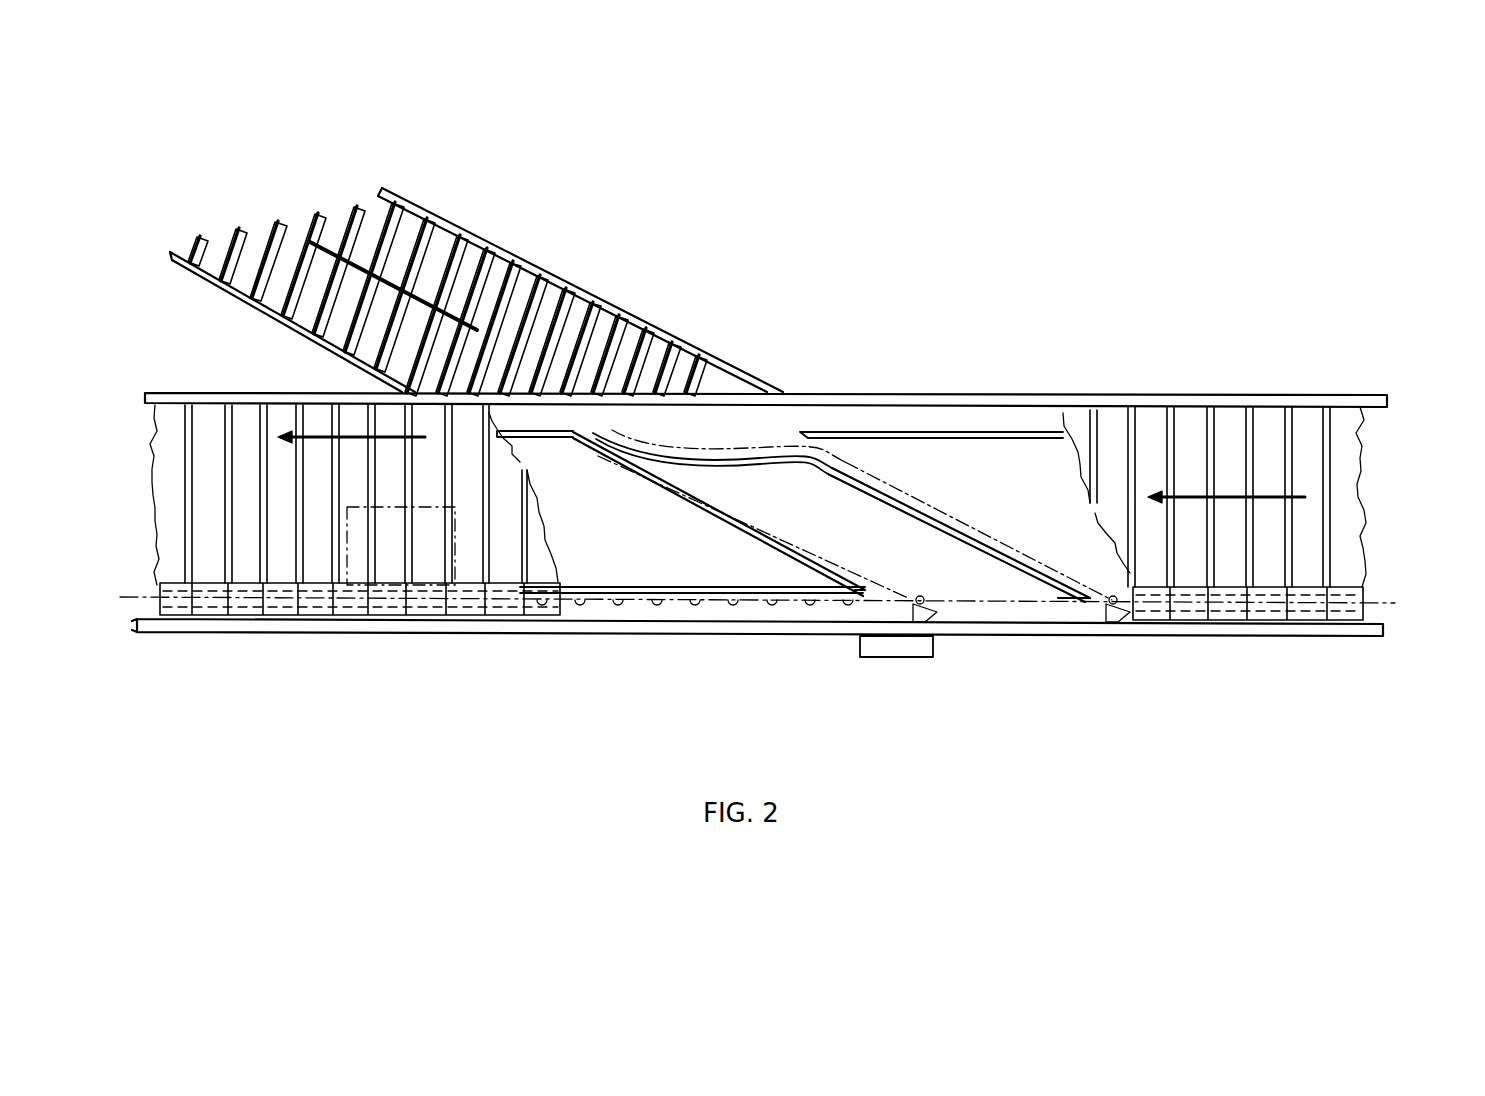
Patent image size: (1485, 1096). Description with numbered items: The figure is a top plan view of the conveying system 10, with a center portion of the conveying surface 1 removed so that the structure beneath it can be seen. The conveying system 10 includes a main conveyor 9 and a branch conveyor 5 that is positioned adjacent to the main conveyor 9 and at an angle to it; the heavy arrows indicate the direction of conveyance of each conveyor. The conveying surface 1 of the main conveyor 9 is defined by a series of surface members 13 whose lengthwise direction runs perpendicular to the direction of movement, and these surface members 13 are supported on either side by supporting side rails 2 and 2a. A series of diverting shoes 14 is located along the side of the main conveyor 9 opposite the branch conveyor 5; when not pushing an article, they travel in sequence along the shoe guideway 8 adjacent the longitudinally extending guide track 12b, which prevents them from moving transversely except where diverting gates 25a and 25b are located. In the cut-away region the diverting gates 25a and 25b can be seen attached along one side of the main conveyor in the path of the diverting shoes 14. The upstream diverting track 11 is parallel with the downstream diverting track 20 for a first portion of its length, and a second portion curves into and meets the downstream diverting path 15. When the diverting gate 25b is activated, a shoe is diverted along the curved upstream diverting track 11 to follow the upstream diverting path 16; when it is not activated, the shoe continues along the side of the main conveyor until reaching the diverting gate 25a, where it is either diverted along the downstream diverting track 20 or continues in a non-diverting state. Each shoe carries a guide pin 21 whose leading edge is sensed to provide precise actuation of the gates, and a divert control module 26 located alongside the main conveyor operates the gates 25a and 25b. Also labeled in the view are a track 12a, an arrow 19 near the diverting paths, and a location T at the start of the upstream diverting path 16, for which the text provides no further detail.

The conveying surface 1 is at (1272, 471).
The supporting side rail 2 is at (1357, 393).
The supporting side rail 2a is at (1356, 640).
The branch conveyor 5 is at (607, 302).
The shoe guideway 8 is at (997, 602).
The main conveyor 9 is at (1366, 470).
The conveying system 10 is at (373, 628).
The upstream diverting track 11 is at (1000, 548).
The upper rail 12a is at (929, 430).
The guide track 12b is at (817, 606).
The surface members 13 is at (245, 455).
The diverting shoes 14 is at (241, 613).
The downstream diverting path 15 is at (755, 517).
The upstream diverting path 16 is at (914, 506).
The direction arrow 19 is at (704, 520).
The downstream diverting track 20 is at (632, 457).
The guide pin 21 is at (252, 602).
The diverting gate 25a is at (937, 620).
The diverting gate 25b is at (1135, 622).
The divert control module 26 is at (897, 658).
The transition T is at (817, 460).